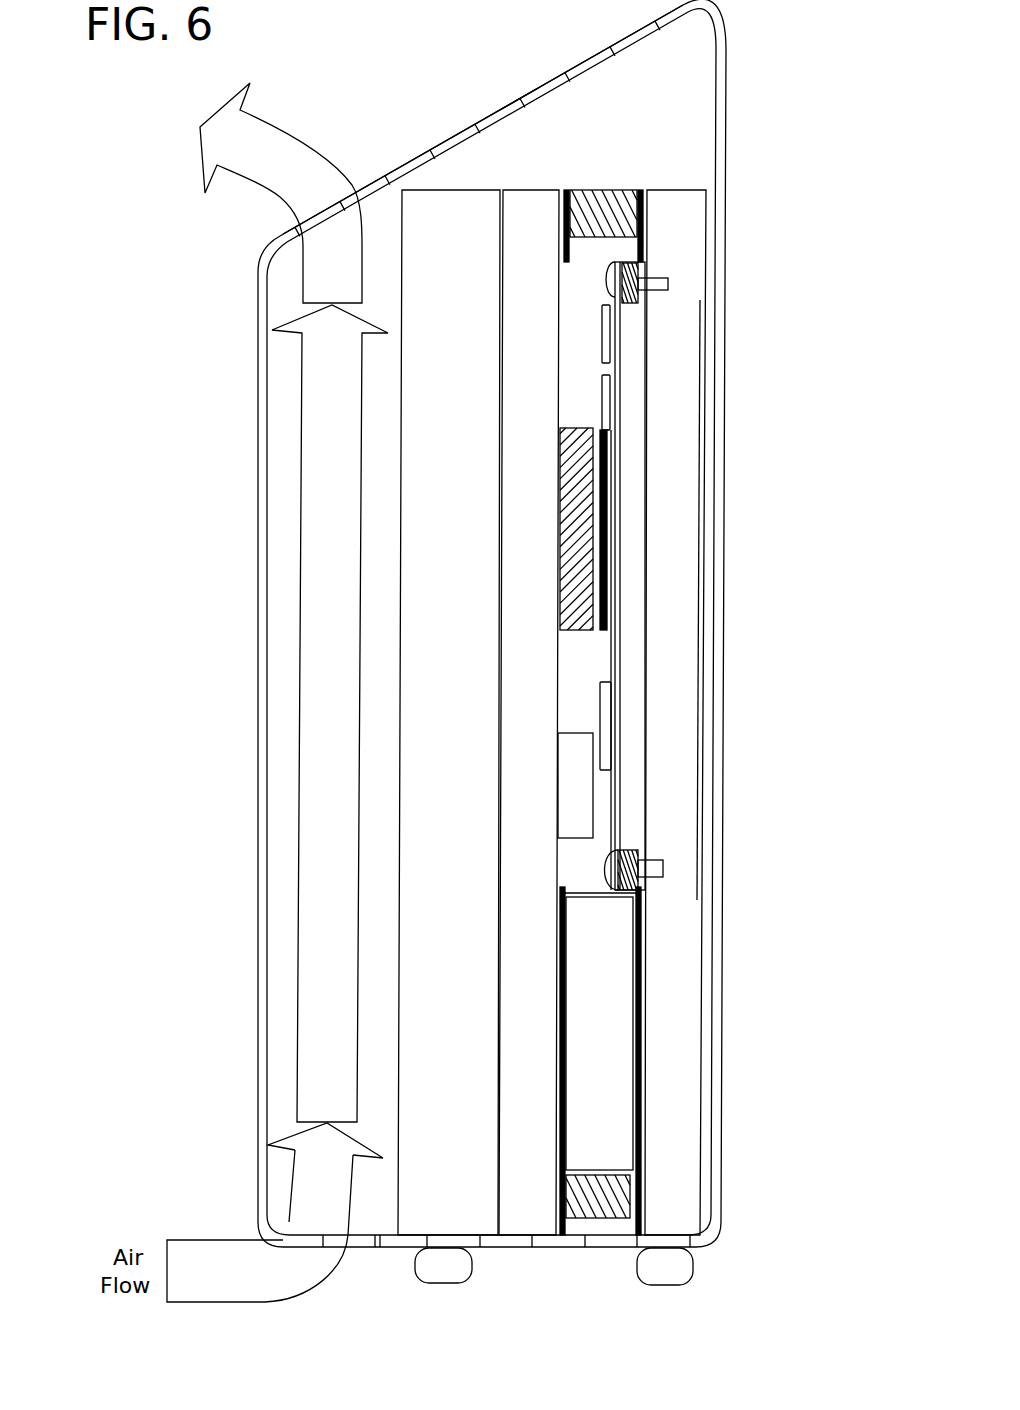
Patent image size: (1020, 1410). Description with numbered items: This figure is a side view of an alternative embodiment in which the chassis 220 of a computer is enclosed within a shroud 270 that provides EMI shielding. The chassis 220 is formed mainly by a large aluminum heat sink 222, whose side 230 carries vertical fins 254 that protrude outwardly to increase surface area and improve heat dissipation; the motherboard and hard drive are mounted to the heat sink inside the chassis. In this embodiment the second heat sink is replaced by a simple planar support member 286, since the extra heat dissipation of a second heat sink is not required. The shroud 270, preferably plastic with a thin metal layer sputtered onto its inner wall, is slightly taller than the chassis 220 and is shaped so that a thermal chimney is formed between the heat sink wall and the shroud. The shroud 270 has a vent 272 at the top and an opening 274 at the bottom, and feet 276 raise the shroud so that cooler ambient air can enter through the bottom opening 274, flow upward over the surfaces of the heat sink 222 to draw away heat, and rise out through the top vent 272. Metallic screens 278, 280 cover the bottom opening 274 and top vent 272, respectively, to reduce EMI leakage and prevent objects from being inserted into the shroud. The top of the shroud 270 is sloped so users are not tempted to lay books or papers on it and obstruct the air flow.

The chassis 220 is at (662, 190).
The first heat sink 222 is at (535, 190).
The side with heat fins 230 is at (397, 985).
The vertical fins 254 is at (457, 217).
The shroud 270 is at (270, 870).
The vent 272 is at (545, 58).
The opening 274 is at (360, 1262).
The feet 276 is at (455, 1268).
The metallic screen 278 is at (517, 100).
The metallic screen 280 is at (393, 1242).
The support member 286 is at (693, 533).